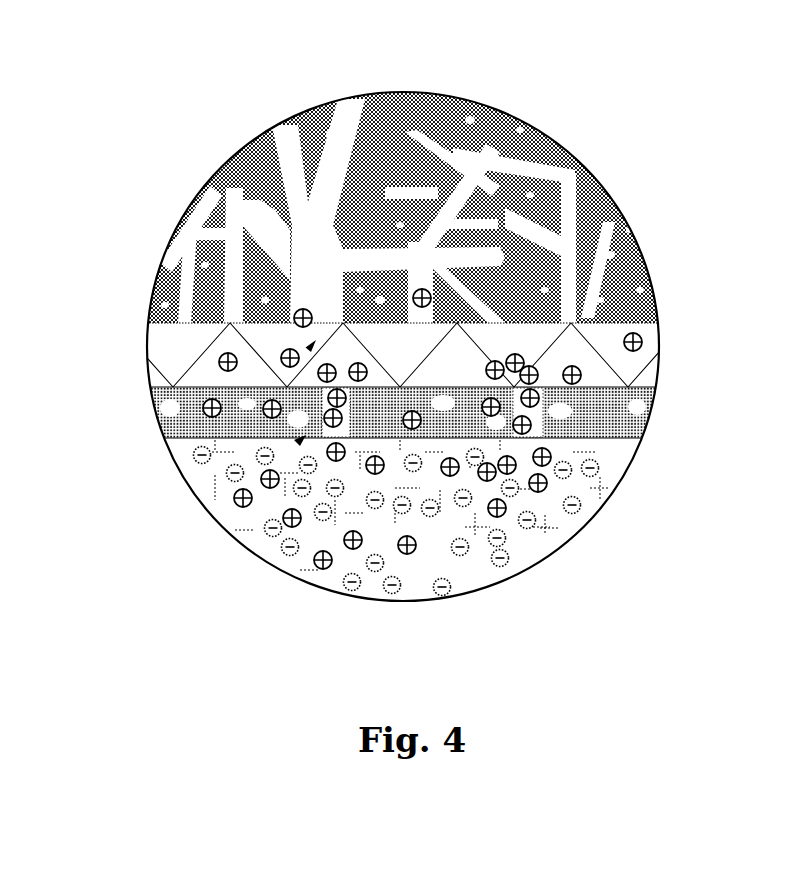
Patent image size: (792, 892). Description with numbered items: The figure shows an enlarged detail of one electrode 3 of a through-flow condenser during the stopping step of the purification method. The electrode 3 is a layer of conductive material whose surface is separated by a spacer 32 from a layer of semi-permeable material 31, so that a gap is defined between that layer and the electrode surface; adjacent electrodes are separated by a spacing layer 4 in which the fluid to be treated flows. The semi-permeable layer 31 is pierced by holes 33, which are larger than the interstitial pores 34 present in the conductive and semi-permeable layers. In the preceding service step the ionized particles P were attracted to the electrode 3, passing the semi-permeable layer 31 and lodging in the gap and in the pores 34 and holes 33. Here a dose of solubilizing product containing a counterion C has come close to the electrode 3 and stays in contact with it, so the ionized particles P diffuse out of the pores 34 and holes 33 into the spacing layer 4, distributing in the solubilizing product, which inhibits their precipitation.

The electrode 3 is at (587, 215).
The spacer 32 is at (642, 344).
The layer of semi-permeable material 31 is at (632, 410).
The spacing layer 4 is at (597, 493).
The holes 33 is at (330, 440).
The pores 34 is at (312, 345).
The ionized particles P is at (318, 562).
The counterion C is at (440, 592).